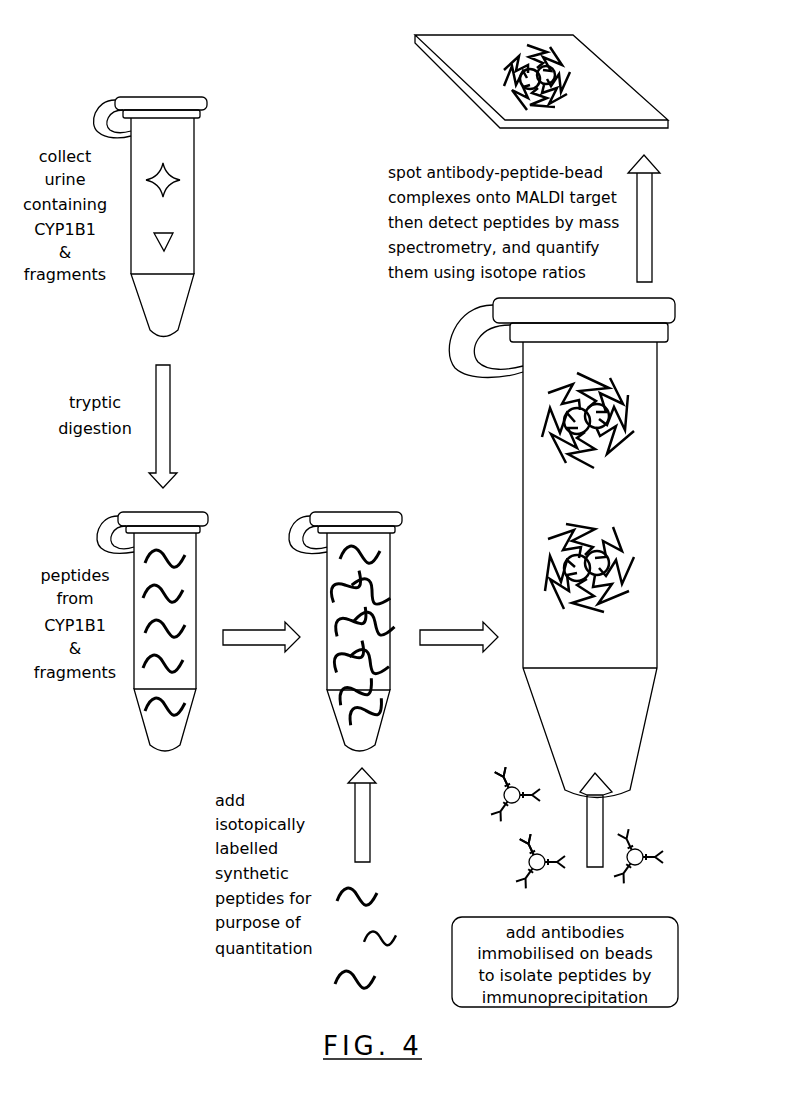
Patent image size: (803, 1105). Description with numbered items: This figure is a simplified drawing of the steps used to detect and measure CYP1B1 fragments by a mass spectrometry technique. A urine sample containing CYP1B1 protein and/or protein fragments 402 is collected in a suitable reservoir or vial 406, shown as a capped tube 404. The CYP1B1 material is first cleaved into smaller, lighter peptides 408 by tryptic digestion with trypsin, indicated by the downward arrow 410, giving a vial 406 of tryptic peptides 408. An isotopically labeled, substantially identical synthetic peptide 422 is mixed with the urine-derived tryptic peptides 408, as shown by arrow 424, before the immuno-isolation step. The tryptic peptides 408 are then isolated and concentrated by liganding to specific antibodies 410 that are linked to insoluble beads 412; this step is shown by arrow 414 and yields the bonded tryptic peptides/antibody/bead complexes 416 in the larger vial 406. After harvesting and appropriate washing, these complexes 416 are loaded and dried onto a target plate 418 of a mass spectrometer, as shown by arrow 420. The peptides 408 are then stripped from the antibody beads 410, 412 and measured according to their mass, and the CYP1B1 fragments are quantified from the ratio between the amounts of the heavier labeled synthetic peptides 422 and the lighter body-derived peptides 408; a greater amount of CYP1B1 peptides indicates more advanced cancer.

The CYP1B1 protein and/or protein fragments 402 is at (180, 183).
The sample tube 404 is at (176, 137).
The reservoir or vial 406 is at (180, 299).
The peptides 408 is at (190, 592).
The arrow / antibodies 410 is at (170, 400).
The insoluble beads 412 is at (502, 801).
The arrow 414 is at (605, 818).
The tryptic peptides/antibody/bead complexes 416 is at (650, 397).
The target plate 418 is at (611, 96).
The arrow 420 is at (652, 237).
The synthetic peptide 422 is at (388, 933).
The arrow 424 is at (370, 823).